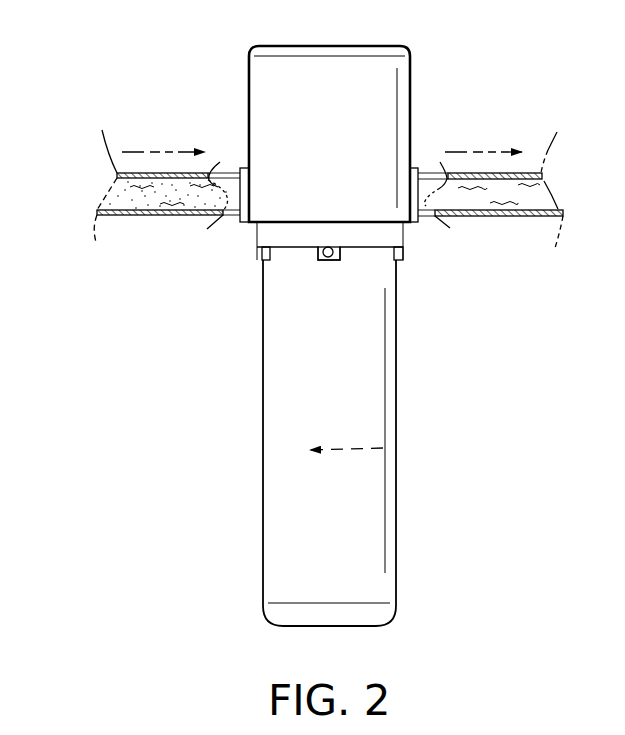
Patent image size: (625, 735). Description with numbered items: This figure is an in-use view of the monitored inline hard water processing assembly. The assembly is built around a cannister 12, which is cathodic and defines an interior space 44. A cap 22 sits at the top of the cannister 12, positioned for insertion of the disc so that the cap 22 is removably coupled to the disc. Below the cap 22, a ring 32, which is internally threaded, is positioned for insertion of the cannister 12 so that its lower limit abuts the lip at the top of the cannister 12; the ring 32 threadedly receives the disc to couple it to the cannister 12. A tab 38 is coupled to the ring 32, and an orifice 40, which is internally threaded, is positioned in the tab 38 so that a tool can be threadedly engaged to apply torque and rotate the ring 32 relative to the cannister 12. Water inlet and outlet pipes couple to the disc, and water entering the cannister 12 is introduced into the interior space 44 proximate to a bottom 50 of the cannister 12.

The cap 22 is at (424, 119).
The ring 32 is at (286, 242).
The orifice 40 is at (352, 253).
The tab 38 is at (340, 273).
The cannister 12 is at (408, 388).
The interior space 44 is at (385, 447).
The bottom 50 is at (333, 611).